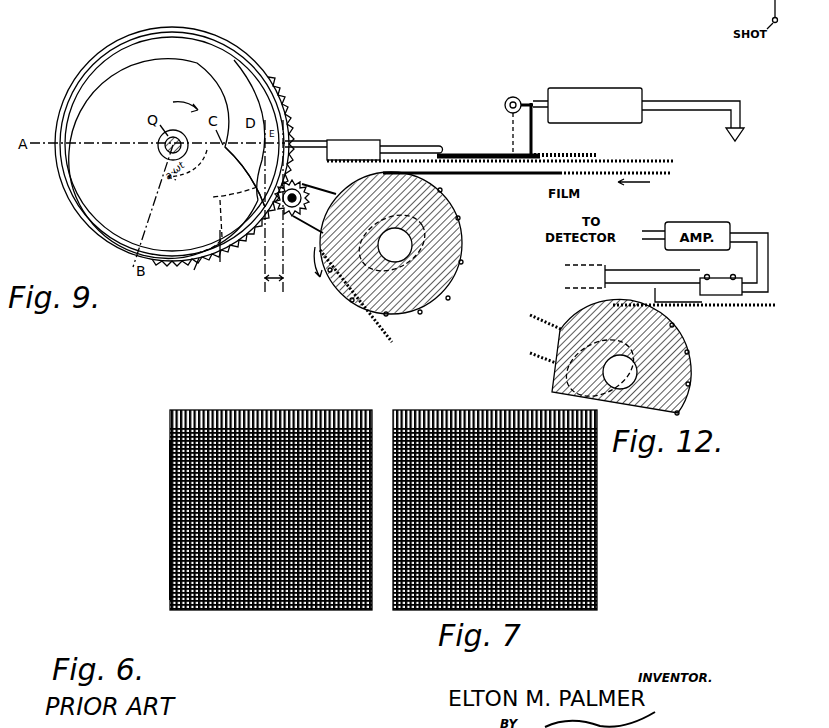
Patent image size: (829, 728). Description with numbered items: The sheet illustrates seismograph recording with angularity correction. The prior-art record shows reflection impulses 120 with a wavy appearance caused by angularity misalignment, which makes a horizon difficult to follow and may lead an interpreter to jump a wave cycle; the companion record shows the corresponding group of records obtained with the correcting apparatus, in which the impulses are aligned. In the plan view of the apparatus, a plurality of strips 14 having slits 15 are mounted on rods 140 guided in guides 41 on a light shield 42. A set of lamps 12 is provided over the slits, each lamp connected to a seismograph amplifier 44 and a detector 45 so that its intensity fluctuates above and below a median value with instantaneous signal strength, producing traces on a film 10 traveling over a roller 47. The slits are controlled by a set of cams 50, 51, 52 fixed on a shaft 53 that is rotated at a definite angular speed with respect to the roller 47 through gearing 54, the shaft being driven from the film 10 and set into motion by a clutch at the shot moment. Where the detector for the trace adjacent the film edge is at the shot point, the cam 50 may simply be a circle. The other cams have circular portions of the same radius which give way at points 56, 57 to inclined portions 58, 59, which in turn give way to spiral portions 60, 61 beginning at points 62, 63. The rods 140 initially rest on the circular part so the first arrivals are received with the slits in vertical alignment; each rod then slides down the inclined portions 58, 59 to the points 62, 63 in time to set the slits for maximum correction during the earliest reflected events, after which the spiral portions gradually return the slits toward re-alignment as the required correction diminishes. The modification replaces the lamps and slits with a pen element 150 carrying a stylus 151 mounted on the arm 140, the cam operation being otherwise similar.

In FIG. 9, the film 10 is at (488, 176).
In FIG. 12, the film 10 is at (762, 313).
In FIG. 6, the film 10 is at (356, 411).
In FIG. 7, the film 10 is at (484, 412).
In FIG. 9, the lamp 12 is at (512, 97).
In FIG. 9, the strip 14 is at (552, 155).
In FIG. 9, the slit 15 is at (510, 152).
In FIG. 9, the guide 41 is at (345, 141).
In FIG. 9, the light shield 42 is at (628, 162).
In FIG. 9, the seismograph amplifier 44 is at (595, 88).
In FIG. 9, the detector 45 is at (745, 134).
In FIG. 9, the roller 47 is at (462, 258).
In FIG. 9, the cam 50 is at (266, 84).
In FIG. 9, the cam 51 is at (177, 47).
In FIG. 9, the cam 52 is at (199, 63).
In FIG. 9, the shaft 53 is at (158, 147).
In FIG. 9, the gearing 54 is at (314, 196).
In FIG. 9, the point 56 is at (264, 207).
In FIG. 9, the point 57 is at (226, 259).
In FIG. 9, the inclined portion 58 is at (263, 206).
In FIG. 9, the inclined portion 59 is at (190, 274).
In FIG. 9, the spiral portion 60 is at (197, 62).
In FIG. 9, the spiral portion 61 is at (242, 63).
In FIG. 9, the point 62 is at (228, 150).
In FIG. 9, the point 63 is at (221, 219).
In FIG. 6, the reflection impulses 120 is at (170, 518).
In FIG. 9, the rod 140 is at (414, 146).
In FIG. 12, the rod 140 is at (632, 267).
In FIG. 12, the pen element 150 is at (713, 295).
In FIG. 12, the stylus 151 is at (673, 295).